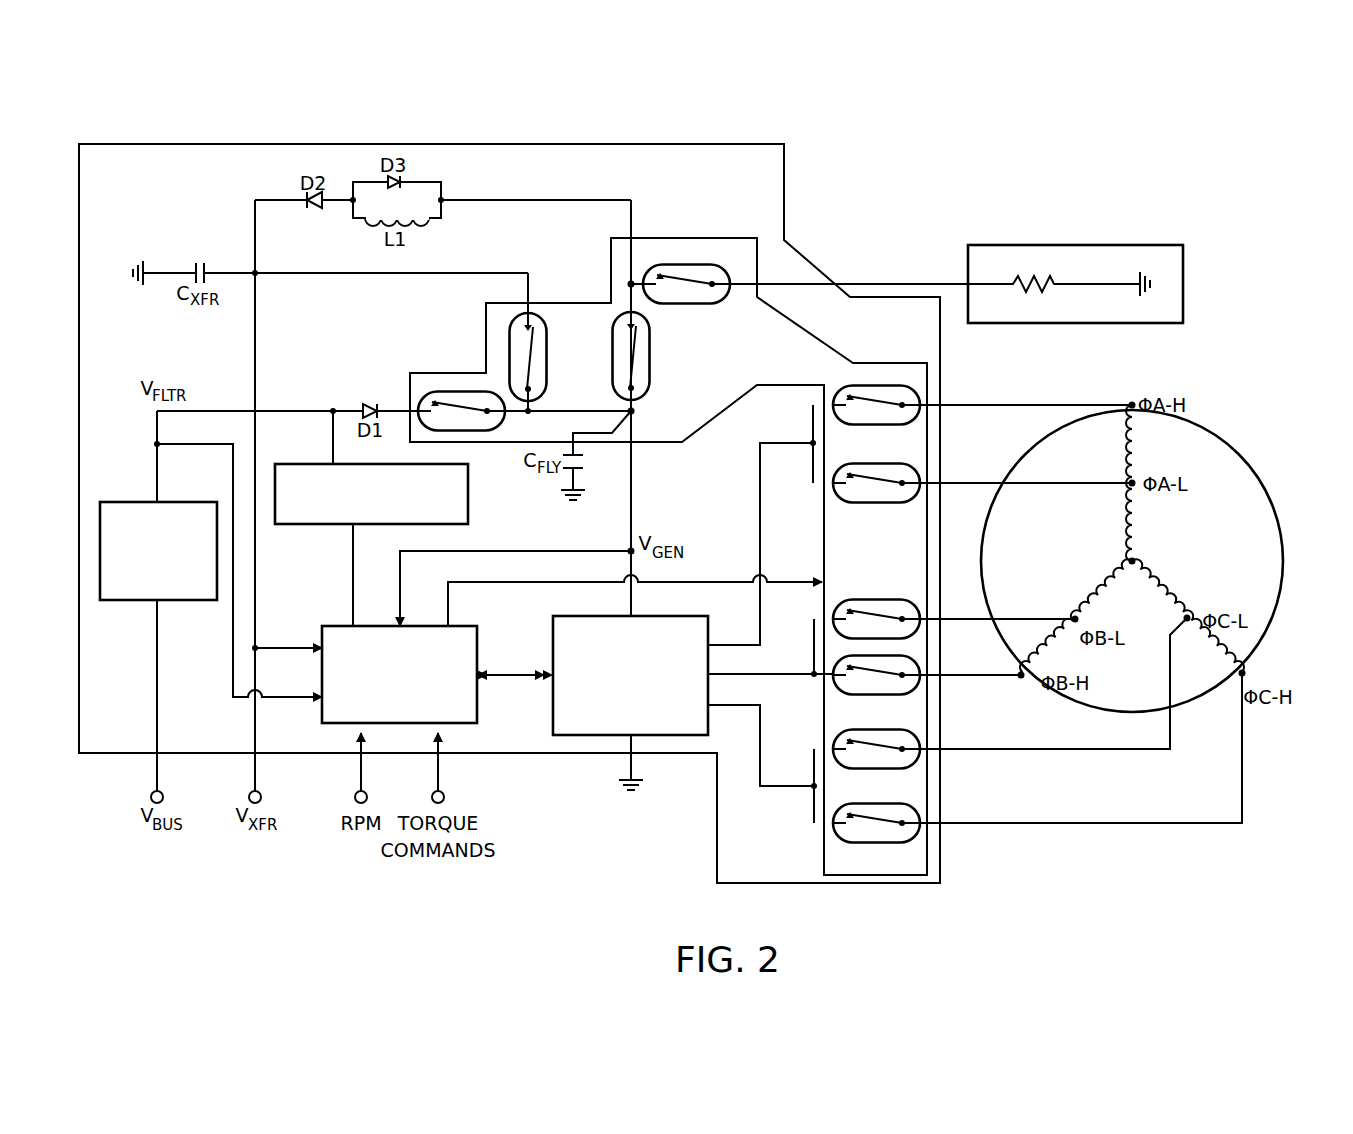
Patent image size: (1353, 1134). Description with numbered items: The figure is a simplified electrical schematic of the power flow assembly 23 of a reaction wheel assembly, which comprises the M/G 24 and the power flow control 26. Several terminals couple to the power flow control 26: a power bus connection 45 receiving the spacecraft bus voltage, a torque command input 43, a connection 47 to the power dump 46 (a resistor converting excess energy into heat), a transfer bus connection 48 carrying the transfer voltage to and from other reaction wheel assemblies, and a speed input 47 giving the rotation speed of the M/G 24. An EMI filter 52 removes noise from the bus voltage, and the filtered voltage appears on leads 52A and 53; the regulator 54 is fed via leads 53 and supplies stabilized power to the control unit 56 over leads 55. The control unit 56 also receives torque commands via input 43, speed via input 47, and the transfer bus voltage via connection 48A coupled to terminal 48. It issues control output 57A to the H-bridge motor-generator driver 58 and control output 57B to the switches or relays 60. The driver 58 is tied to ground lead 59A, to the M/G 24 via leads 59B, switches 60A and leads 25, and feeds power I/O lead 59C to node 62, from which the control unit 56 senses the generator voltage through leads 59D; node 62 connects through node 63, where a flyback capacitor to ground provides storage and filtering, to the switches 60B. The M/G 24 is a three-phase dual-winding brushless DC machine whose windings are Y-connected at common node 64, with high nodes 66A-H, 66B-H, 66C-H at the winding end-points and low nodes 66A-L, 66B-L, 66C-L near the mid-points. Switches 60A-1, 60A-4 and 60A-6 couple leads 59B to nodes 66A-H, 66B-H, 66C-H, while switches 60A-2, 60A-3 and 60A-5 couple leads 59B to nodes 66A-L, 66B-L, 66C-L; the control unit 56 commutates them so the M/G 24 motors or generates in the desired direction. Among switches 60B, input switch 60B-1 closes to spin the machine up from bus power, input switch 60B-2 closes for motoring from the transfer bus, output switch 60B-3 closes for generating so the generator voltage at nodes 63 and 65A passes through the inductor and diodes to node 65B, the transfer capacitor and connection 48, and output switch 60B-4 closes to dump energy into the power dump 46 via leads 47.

The power flow assembly 23 is at (582, 802).
The M/G 24 is at (1132, 561).
The leads 25 is at (962, 830).
The power flow control 26 is at (717, 818).
The torque command input 43 is at (444, 794).
The power bus connection 45 is at (163, 794).
The power dump 46 is at (1075, 245).
The connection to power dump / speed (RPM) input 47 is at (893, 284).
The transfer (XFR) bus connection 48 is at (261, 794).
The connection 48A is at (285, 648).
The EMI filter 52 is at (133, 502).
The lead 52A is at (233, 665).
The leads 53 is at (310, 411).
The regulator 54 is at (300, 464).
The leads 55 is at (353, 565).
The control unit 56 is at (322, 718).
The control output 57A is at (515, 675).
The control output 57B is at (487, 582).
The H-bridge motor-generator driver 58 is at (553, 716).
The ground lead 59A is at (631, 776).
The leads or bus 59B is at (735, 766).
The power I/O lead 59C is at (631, 488).
The leads 59D is at (497, 551).
The switches or relays 60 is at (705, 428).
The switches 60A is at (906, 635).
The switch 60A-1 is at (872, 385).
The switch 60A-2 is at (876, 503).
The switch 60A-3 is at (862, 600).
The switch 60A-4 is at (912, 694).
The switch 60A-5 is at (912, 768).
The switch 60A-6 is at (895, 842).
The switches 60B is at (499, 265).
The input switch 60B-1 is at (455, 393).
The input switch 60B-2 is at (510, 338).
The output switch 60B-3 is at (648, 378).
The output switch 60B-4 is at (690, 303).
The node 62 is at (628, 551).
The node 63 is at (634, 411).
The common node 64 is at (1134, 561).
The node 65A is at (628, 284).
The node 65B is at (255, 273).
The phase node 66A-H is at (1132, 405).
The phase node 66A-L is at (1130, 484).
The phase node 66B-L is at (1075, 619).
The phase node 66B-H is at (1021, 675).
The phase node 66C-L is at (1189, 616).
The phase node 66C-H is at (1244, 673).